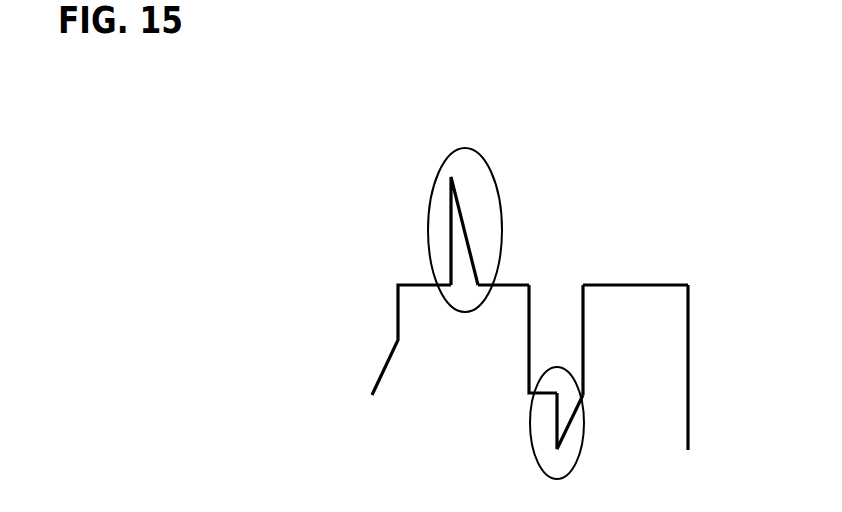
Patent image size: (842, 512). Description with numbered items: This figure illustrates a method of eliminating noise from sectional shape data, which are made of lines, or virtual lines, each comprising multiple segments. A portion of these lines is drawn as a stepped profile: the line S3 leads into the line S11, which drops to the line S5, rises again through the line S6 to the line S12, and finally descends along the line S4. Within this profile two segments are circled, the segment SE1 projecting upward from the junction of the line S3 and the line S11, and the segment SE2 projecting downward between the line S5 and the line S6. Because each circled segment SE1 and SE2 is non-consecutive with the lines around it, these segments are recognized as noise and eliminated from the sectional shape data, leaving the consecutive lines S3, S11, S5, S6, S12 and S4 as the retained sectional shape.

The line S3 is at (398, 312).
The segment SE1 is at (451, 228).
The line S11 is at (520, 283).
The line S5 is at (529, 334).
The segment SE2 is at (557, 426).
The line S6 is at (585, 336).
The line S12 is at (626, 283).
The line S4 is at (690, 368).